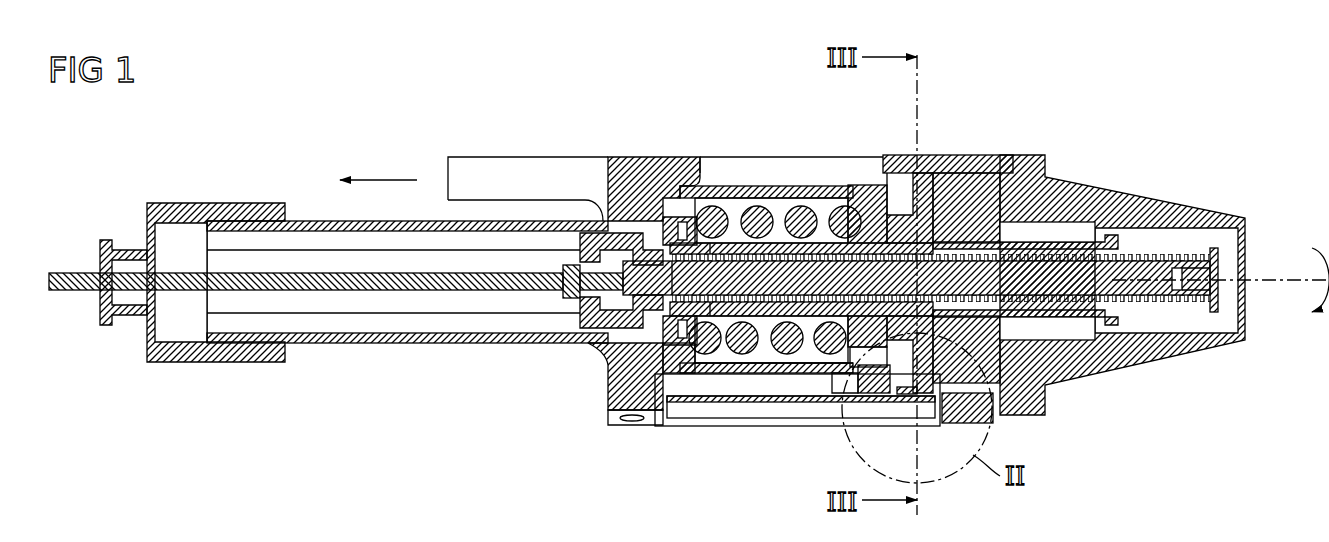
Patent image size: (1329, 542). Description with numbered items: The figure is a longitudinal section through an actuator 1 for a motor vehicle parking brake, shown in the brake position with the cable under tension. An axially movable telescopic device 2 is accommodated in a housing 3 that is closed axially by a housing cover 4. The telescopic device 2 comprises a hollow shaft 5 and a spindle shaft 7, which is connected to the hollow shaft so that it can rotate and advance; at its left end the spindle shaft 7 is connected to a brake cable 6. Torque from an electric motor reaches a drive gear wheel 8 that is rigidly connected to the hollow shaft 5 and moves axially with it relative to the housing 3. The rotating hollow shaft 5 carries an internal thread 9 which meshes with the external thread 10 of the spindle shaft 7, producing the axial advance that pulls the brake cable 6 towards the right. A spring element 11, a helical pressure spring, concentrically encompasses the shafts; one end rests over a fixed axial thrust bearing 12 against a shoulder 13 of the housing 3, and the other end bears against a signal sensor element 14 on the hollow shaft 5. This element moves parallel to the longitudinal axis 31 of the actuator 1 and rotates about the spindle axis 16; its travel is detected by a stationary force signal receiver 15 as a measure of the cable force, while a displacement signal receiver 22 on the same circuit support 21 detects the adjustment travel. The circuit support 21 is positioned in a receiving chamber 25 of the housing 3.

The actuator 1 is at (683, 118).
The telescopic device 2 is at (557, 298).
The housing 3 is at (515, 168).
The housing cover 4 is at (1085, 200).
The hollow shaft 5 is at (720, 190).
The brake cable 6 is at (75, 292).
The spindle shaft 7 is at (1145, 265).
The drive gear wheel 8 is at (972, 197).
The internal thread 9 is at (757, 192).
The external thread 10 is at (1165, 300).
The spring element 11 is at (742, 370).
The axial thrust bearing 12 is at (665, 190).
The shoulder 13 is at (608, 368).
The signal sensor element 14 is at (868, 192).
The force signal receiver 15 is at (838, 374).
The spindle axis 16 is at (1282, 268).
The circuit support 21 is at (775, 400).
The displacement signal receiver 22 is at (907, 395).
The receiving chamber 25 is at (702, 388).
The longitudinal axis 31 is at (385, 178).